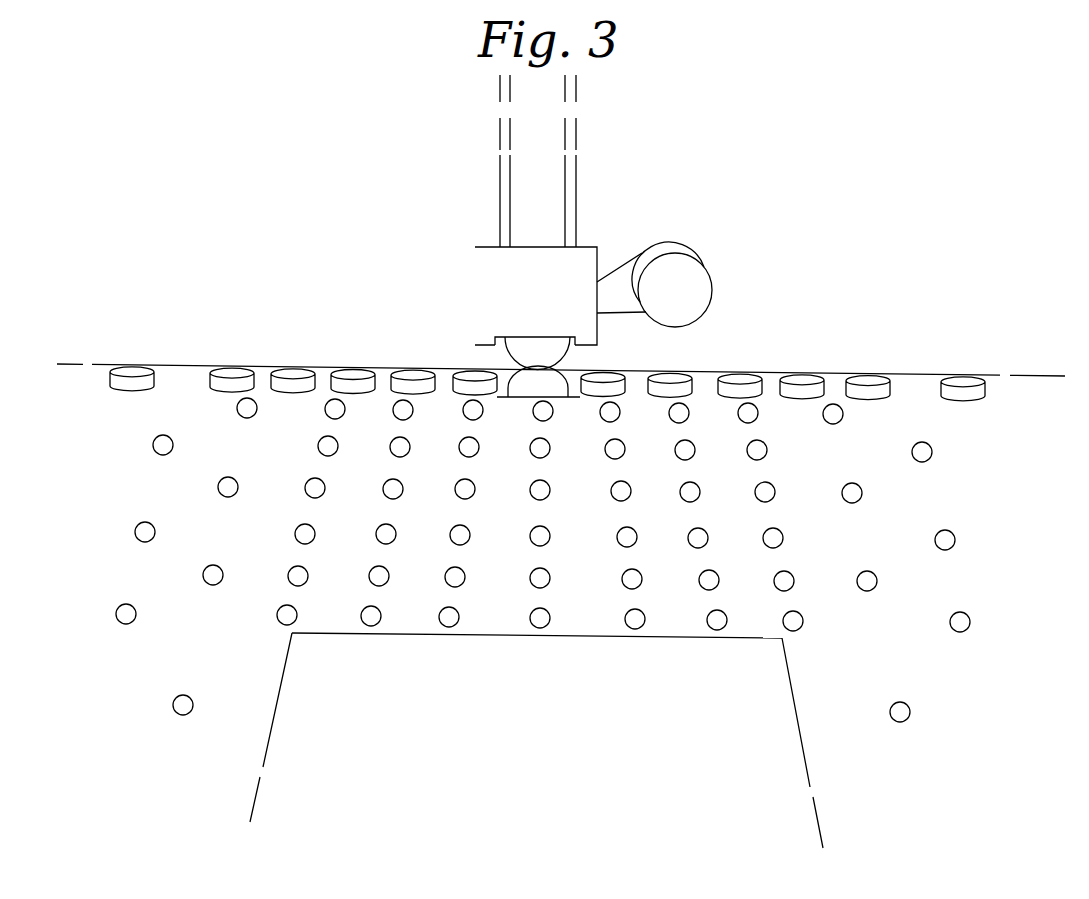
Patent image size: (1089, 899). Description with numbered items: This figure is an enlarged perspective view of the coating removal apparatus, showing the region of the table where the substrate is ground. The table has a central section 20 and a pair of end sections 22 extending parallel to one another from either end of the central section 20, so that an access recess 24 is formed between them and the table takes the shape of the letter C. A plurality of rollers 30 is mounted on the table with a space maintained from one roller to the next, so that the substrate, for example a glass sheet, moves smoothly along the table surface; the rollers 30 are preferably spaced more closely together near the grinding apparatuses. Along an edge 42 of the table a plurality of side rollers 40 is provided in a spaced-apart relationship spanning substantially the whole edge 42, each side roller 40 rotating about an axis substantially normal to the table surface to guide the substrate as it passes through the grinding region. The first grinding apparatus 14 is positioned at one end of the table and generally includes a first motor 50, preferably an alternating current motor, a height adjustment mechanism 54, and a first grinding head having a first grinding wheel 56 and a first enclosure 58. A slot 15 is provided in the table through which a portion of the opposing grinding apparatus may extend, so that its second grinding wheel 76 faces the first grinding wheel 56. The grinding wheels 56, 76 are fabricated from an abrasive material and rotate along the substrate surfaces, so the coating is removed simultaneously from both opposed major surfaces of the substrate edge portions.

The first grinding apparatus 14 is at (495, 270).
The slot 15 is at (497, 377).
The central section 20 is at (567, 623).
The end sections 22 is at (247, 705).
The access recess 24 is at (525, 757).
The rollers 30 is at (225, 477).
The side rollers 40 is at (968, 375).
The edge 42 is at (266, 366).
The first motor 50 is at (703, 263).
The height adjustment mechanism 54 is at (576, 197).
The first grinding wheel 56 is at (522, 350).
The first enclosure 58 is at (492, 307).
The second grinding wheel 76 is at (557, 390).